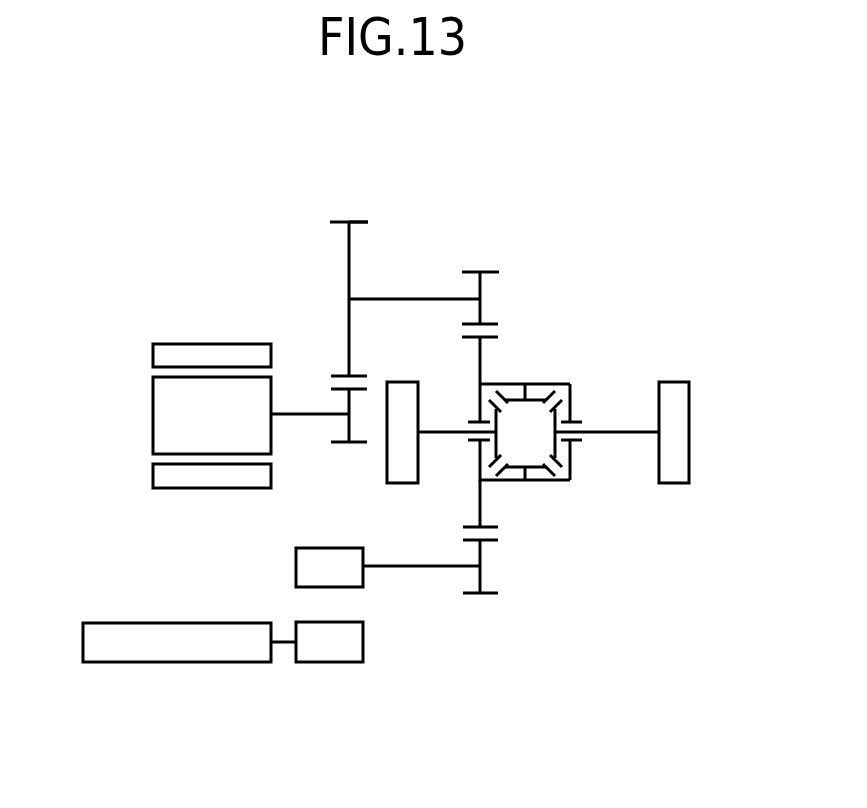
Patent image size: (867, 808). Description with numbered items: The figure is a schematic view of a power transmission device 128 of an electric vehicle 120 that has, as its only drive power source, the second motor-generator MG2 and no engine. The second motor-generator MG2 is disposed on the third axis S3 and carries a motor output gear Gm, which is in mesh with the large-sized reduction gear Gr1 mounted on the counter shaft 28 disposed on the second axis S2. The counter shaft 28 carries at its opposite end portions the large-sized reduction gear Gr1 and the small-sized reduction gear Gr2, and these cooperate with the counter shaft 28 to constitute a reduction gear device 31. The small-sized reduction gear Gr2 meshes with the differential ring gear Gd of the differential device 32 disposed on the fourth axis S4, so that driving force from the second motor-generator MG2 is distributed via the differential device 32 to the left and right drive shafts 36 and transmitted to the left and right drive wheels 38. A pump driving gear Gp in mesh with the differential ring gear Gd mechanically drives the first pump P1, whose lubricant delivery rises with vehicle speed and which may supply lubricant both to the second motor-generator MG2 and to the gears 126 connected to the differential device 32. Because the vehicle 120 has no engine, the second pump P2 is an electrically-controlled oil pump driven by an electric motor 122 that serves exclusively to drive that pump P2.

The electric vehicle 120 is at (531, 255).
The electric motor 122 is at (85, 622).
The gears 126 is at (408, 222).
The power transmission device 128 is at (286, 305).
The counter shaft 28 is at (396, 319).
The reduction gear device 31 is at (529, 286).
The differential device 32 is at (565, 510).
The drive shafts 36 is at (447, 436).
The drive wheels 38 is at (402, 472).
The large-sized reduction gear Gr1 is at (367, 223).
The small-sized reduction gear Gr2 is at (490, 272).
The motor output gear Gm is at (341, 446).
The differential ring gear Gd is at (492, 336).
The pump driving gear Gp is at (471, 596).
The second axis S2 is at (322, 300).
The third axis S3 is at (235, 416).
The fourth axis S4 is at (711, 435).
The second motor-generator MG2 is at (212, 402).
The first pump P1 is at (388, 567).
The second pump P2 is at (317, 642).